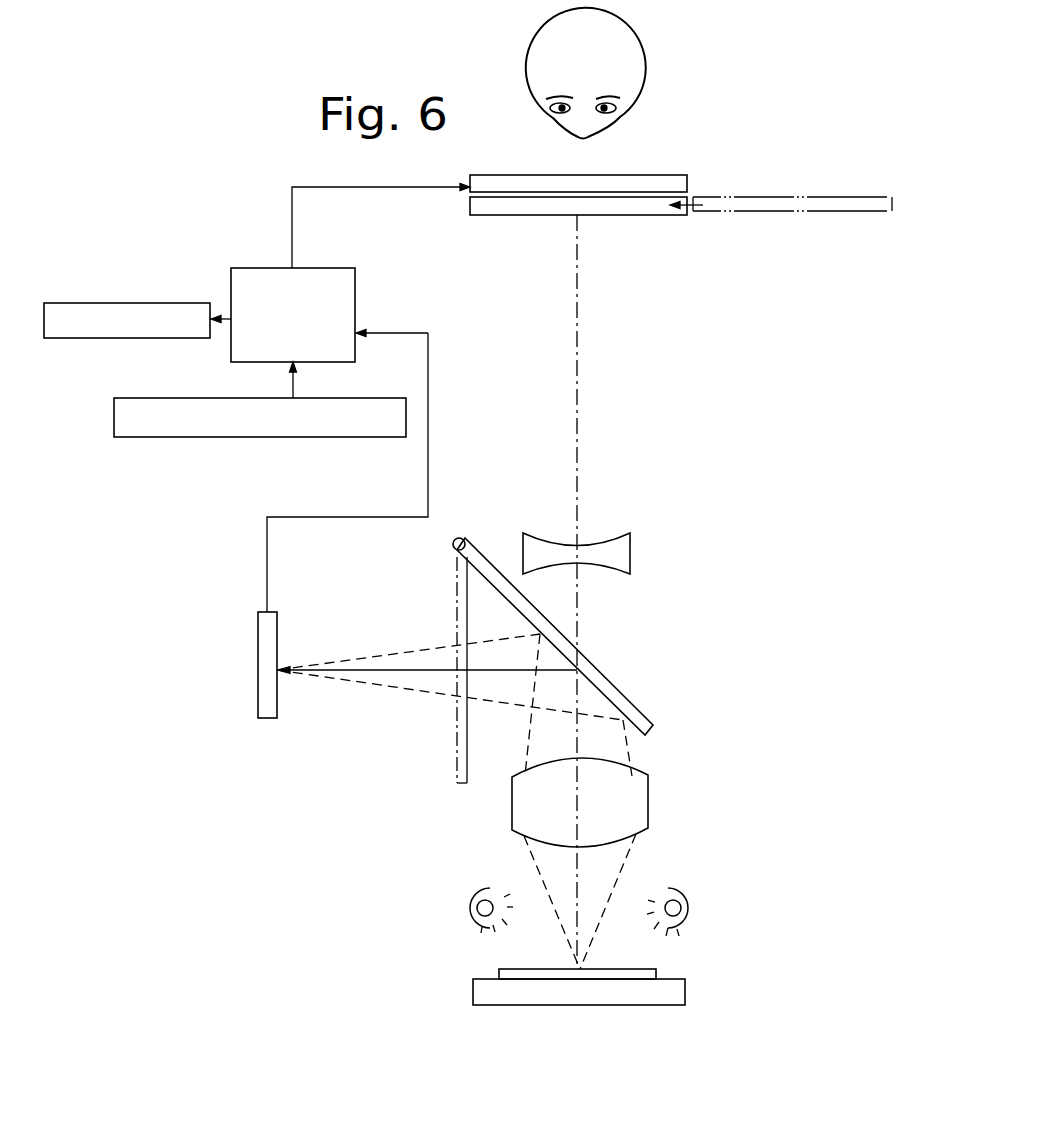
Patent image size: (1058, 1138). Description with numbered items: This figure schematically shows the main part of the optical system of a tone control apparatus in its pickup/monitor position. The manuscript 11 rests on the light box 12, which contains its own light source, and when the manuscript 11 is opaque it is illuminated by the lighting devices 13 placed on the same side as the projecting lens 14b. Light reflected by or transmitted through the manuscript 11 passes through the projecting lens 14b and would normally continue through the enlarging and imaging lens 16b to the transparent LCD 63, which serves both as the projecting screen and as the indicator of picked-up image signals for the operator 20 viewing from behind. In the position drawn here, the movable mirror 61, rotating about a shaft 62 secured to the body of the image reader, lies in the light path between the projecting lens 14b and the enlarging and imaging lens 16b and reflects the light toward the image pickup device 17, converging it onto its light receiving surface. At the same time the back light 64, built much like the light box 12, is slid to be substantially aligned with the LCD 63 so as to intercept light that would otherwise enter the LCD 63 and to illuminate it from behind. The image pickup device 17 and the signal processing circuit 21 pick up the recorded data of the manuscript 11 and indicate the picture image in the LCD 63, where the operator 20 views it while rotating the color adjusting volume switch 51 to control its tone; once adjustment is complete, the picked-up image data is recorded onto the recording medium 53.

The operator 20 is at (640, 77).
The LCD 63 is at (685, 183).
The back light 64 is at (667, 212).
The signal processing circuit 21 is at (245, 267).
The recording medium 53 is at (141, 303).
The color adjusting volume switch 51 is at (292, 437).
The image pickup device 17 is at (267, 717).
The enlarging and imaging lens 16b is at (610, 553).
The shaft 62 is at (458, 538).
The movable mirror 61 is at (620, 698).
The projecting lens 14b is at (635, 805).
The lighting device 13 is at (692, 906).
The manuscript 11 is at (655, 972).
The light box 12 is at (680, 993).